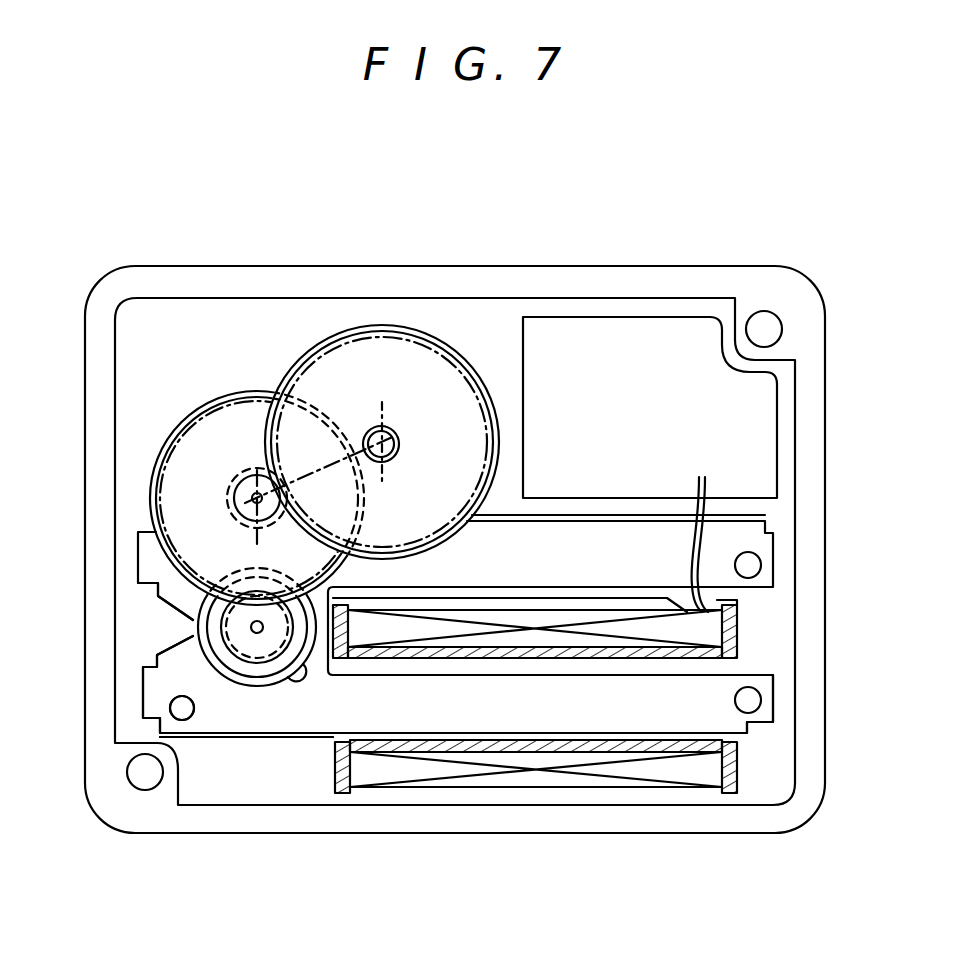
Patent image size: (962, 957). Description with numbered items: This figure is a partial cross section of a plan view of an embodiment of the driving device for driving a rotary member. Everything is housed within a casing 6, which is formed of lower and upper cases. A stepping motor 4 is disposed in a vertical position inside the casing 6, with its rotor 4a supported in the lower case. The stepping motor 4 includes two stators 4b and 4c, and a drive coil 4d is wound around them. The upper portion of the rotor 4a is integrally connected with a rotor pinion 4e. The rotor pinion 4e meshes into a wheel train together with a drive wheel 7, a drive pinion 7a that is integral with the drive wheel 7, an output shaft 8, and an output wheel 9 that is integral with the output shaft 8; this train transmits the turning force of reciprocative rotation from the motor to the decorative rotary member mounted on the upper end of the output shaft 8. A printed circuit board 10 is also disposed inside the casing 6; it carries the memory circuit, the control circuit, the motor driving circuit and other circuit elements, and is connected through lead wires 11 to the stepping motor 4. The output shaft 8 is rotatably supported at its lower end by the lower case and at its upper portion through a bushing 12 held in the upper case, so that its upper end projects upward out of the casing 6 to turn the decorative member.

The stepping motor 4 is at (130, 603).
The rotor 4a is at (198, 625).
The stator 4b is at (218, 720).
The stator 4c is at (237, 740).
The drive coil 4d is at (545, 782).
The rotor pinion 4e is at (225, 641).
The casing 6 is at (515, 254).
The drive wheel 7 is at (170, 427).
The drive pinion 7a is at (243, 468).
The output shaft 8 is at (388, 440).
The output wheel 9 is at (334, 334).
The printed circuit board 10 is at (618, 326).
The lead wires 11 is at (715, 507).
The bushing 12 is at (398, 448).